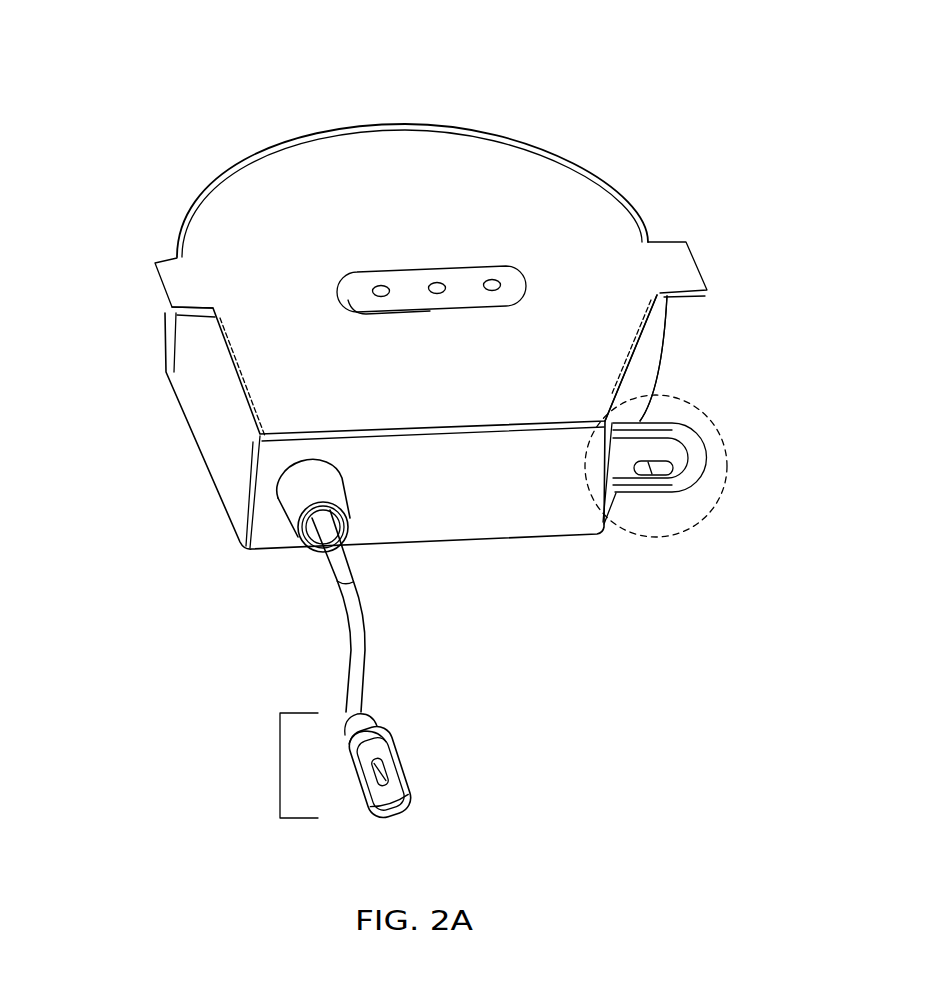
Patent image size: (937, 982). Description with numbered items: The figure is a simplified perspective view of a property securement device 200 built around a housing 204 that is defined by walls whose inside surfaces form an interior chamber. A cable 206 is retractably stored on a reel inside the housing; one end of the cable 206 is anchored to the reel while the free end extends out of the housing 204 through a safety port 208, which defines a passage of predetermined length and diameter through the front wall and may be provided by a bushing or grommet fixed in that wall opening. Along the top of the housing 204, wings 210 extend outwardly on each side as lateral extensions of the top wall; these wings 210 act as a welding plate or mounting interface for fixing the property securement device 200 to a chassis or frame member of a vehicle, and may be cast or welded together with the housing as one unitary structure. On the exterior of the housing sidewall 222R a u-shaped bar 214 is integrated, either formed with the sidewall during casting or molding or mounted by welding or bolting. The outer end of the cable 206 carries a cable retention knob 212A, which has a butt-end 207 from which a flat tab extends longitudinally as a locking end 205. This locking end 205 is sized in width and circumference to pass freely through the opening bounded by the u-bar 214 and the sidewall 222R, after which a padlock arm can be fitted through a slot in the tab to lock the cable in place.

The property securement device 200 is at (173, 110).
The housing 204 is at (550, 183).
The locking end 205 is at (407, 778).
The cable 206 is at (350, 647).
The butt-end 207 is at (367, 722).
The safety port 208 is at (280, 497).
The wings 210 is at (690, 250).
The cable retention knob 212A is at (259, 765).
The u-shaped bar 214 is at (690, 430).
The housing sidewall 222R is at (643, 385).